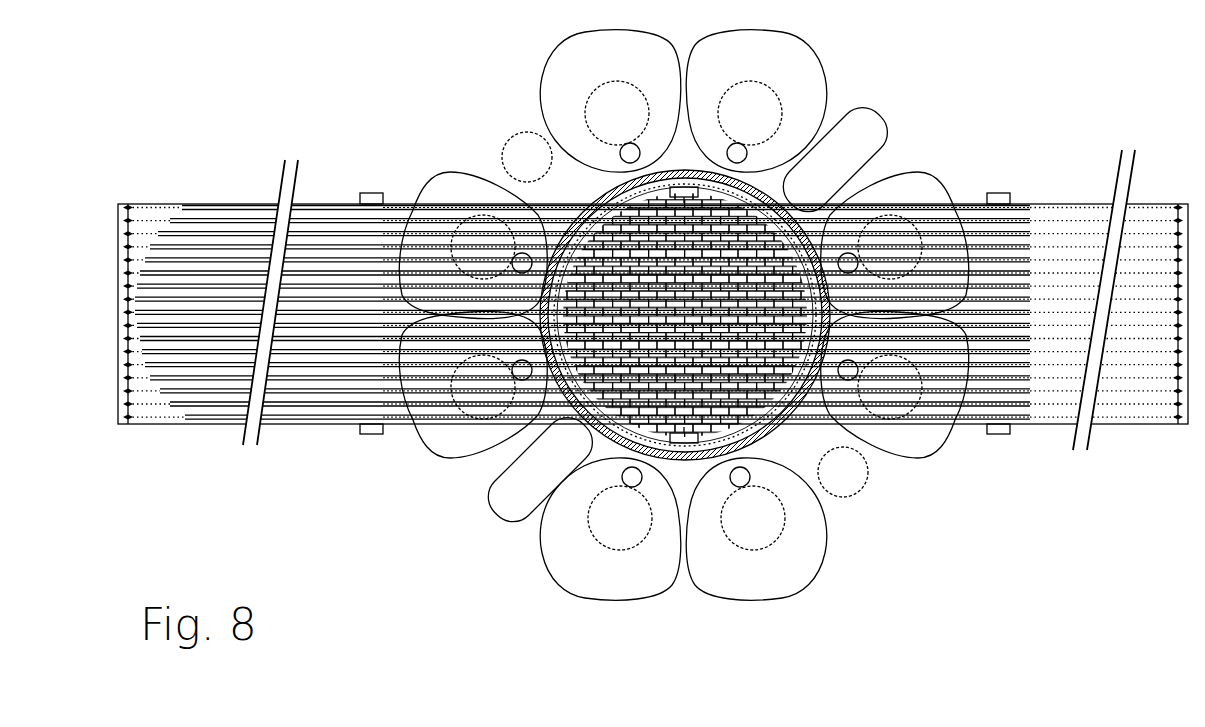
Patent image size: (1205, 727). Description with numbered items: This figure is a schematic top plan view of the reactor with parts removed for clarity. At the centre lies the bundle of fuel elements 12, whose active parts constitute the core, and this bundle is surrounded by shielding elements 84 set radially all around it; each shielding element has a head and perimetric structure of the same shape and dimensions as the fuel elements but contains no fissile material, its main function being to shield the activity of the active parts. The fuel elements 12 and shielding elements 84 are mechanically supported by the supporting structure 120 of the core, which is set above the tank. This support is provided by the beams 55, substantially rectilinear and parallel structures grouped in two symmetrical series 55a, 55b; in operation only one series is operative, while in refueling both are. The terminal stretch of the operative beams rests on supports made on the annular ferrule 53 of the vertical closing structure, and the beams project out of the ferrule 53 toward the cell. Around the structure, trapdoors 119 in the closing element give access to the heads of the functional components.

The fuel elements 12 is at (820, 226).
The ferrule 53 is at (707, 457).
The beams 55 is at (425, 397).
The first series of beams 55a is at (392, 222).
The second series of beams 55b is at (955, 295).
The shielding elements 84 is at (835, 440).
The trapdoors 119 is at (614, 92).
The supporting structure 120 is at (417, 175).